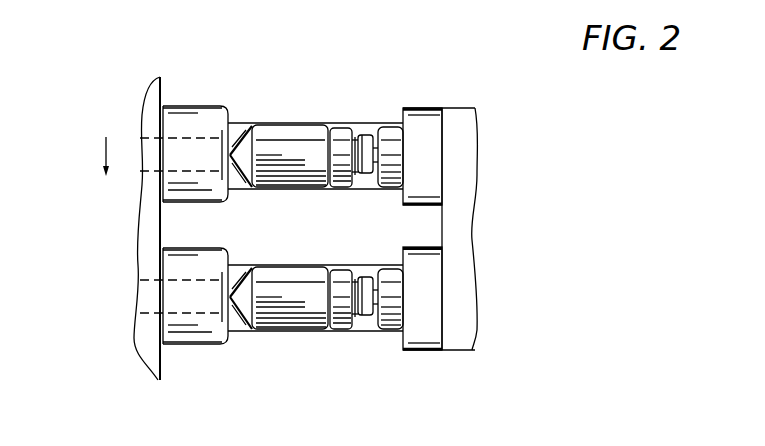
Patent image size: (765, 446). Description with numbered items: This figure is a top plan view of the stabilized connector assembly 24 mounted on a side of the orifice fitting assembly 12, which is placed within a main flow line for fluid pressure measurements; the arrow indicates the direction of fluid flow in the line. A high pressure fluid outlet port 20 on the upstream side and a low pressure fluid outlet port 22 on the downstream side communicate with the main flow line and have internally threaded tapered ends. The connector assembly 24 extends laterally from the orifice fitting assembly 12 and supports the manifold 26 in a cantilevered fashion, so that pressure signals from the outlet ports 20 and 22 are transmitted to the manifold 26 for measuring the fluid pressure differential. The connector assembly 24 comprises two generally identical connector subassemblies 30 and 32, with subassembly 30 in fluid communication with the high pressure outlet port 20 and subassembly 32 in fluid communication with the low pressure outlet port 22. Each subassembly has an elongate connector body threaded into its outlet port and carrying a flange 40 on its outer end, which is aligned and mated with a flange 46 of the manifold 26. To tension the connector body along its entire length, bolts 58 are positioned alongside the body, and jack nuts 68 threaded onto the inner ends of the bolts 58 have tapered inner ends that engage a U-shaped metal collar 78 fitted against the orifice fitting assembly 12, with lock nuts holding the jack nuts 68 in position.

The orifice fitting assembly 12 is at (136, 252).
The high pressure fluid outlet port 20 is at (205, 138).
The low pressure fluid outlet port 22 is at (206, 351).
The stabilized connector assembly 24 is at (267, 106).
The manifold 26 is at (458, 103).
The connector subassembly 30 is at (306, 125).
The connector subassembly 32 is at (316, 334).
The flange 40 is at (418, 113).
The flange 46 is at (460, 347).
The bolt 58 is at (366, 174).
The jack nut 68 is at (292, 194).
The U-shaped collar 78 is at (196, 106).